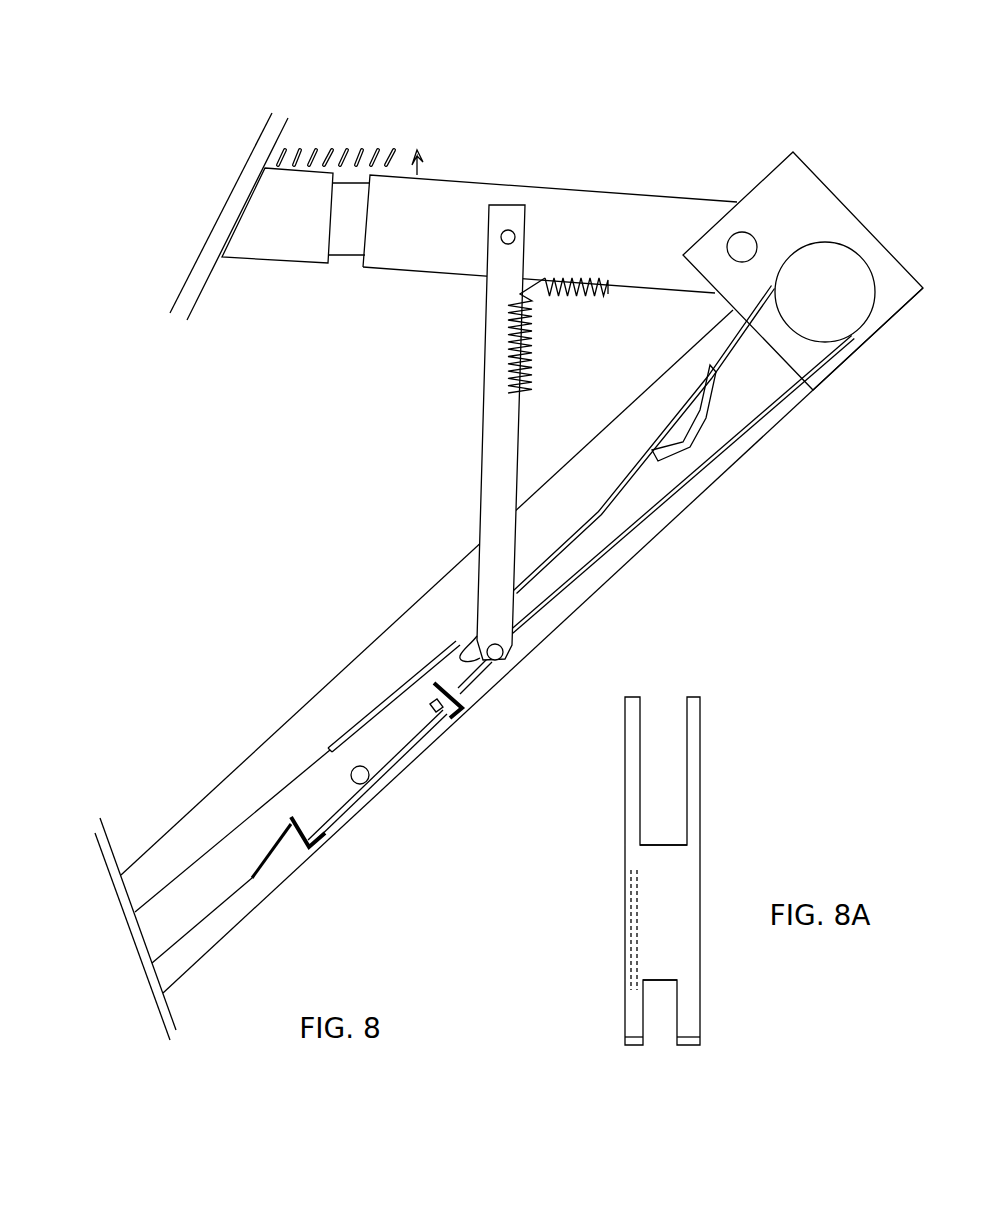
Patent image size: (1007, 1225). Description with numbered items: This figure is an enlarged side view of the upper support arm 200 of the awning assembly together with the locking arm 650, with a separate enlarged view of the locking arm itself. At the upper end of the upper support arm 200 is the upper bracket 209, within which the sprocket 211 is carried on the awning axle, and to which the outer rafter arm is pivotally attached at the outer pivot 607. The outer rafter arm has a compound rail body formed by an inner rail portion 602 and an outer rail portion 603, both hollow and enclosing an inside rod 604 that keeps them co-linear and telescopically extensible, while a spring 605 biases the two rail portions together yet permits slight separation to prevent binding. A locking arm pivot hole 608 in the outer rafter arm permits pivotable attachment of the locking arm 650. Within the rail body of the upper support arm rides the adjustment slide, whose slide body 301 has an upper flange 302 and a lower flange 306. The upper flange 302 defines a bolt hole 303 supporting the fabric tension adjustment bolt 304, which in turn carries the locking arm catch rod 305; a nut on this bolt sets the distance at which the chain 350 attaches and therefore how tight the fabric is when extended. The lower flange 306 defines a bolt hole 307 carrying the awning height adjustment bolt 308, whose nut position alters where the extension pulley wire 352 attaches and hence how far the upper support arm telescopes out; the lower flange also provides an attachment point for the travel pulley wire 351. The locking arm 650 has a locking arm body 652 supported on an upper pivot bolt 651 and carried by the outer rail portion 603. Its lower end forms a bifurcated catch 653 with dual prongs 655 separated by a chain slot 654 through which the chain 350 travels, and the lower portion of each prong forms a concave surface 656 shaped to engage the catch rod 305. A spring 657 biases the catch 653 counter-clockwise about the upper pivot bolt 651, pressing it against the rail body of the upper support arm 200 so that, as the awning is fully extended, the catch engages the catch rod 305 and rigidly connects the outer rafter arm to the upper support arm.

In FIG. 8, the upper support arm 200 is at (374, 639).
In FIG. 8, the upper bracket 209 is at (853, 210).
In FIG. 8, the sprocket 211 is at (837, 303).
In FIG. 8, the slide body 301 is at (372, 780).
In FIG. 8, the upper flange 302 is at (437, 683).
In FIG. 8, the bolt hole 303 is at (456, 695).
In FIG. 8, the fabric tension adjustment bolt 304 is at (545, 620).
In FIG. 8, the locking arm catch rod 305 is at (501, 654).
In FIG. 8, the lower flange 306 is at (290, 820).
In FIG. 8, the bolt hole 307 is at (293, 827).
In FIG. 8, the awning height adjustment bolt 308 is at (543, 640).
In FIG. 8, the chain 350 is at (345, 730).
In FIG. 8, the travel pulley wire 351 is at (235, 890).
In FIG. 8, the extension pulley wire 352 is at (114, 812).
In FIG. 8, the inner rail portion 602 is at (283, 243).
In FIG. 8, the outer rail portion 603 is at (450, 217).
In FIG. 8, the inside rod 604 is at (347, 230).
In FIG. 8, the spring 605 is at (372, 128).
In FIG. 8, the outer pivot 607 is at (740, 240).
In FIG. 8, the locking arm pivot hole 608 is at (490, 275).
In FIG. 8A, the locking arm 650 is at (733, 800).
In FIG. 8, the upper pivot bolt 651 is at (527, 208).
In FIG. 8A, the locking arm body 652 is at (663, 907).
In FIG. 8, the bifurcated catch 653 is at (468, 630).
In FIG. 8A, the bifurcated catch 653 is at (610, 977).
In FIG. 8A, the chain slot 654 is at (656, 1027).
In FIG. 8A, the prongs 655 is at (692, 1018).
In FIG. 8A, the concave surface 656 is at (633, 1045).
In FIG. 8, the spring 657 is at (512, 333).